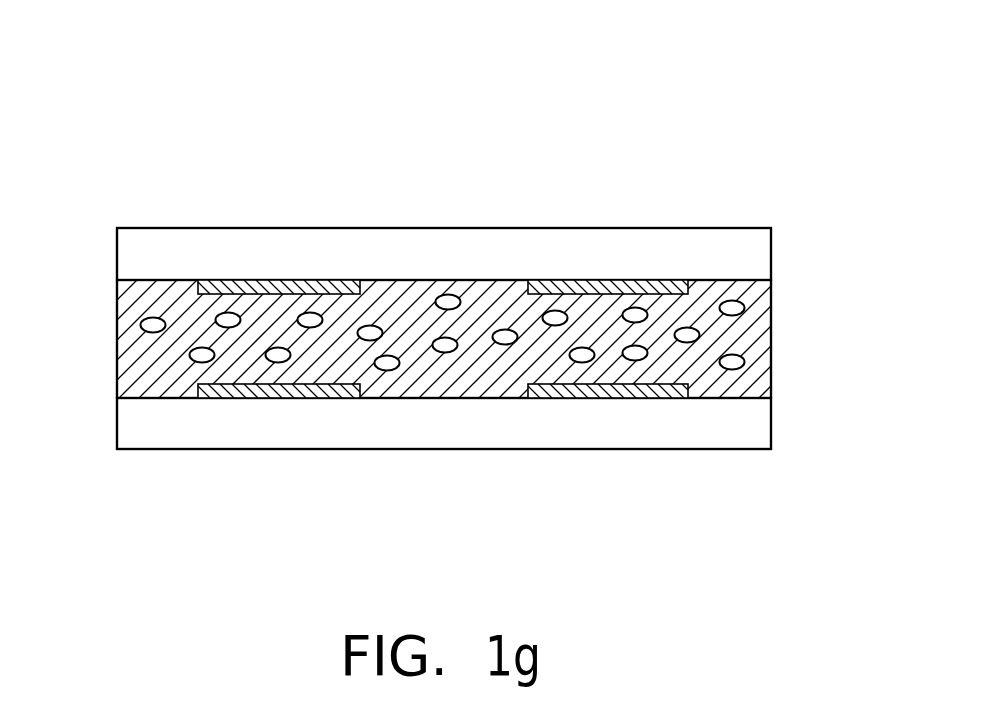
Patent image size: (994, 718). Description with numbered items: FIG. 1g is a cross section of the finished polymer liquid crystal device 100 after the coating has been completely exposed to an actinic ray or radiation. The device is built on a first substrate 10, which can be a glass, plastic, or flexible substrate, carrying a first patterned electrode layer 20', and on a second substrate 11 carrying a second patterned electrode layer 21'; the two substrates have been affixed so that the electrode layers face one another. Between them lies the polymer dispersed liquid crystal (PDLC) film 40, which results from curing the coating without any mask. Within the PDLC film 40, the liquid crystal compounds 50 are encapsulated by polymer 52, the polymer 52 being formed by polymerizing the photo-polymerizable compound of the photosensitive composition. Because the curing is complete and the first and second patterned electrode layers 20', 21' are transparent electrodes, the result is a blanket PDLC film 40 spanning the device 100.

The polymer liquid crystal device 100 is at (840, 62).
The first substrate 10 is at (763, 427).
The second substrate 11 is at (763, 253).
The first patterned electrode layer 20' is at (443, 456).
The second patterned electrode layer 21' is at (443, 222).
The polymer dispersed liquid crystal (PDLC) film 40 is at (447, 339).
The liquid crystal compound 50 is at (157, 333).
The polymer 52 is at (127, 355).